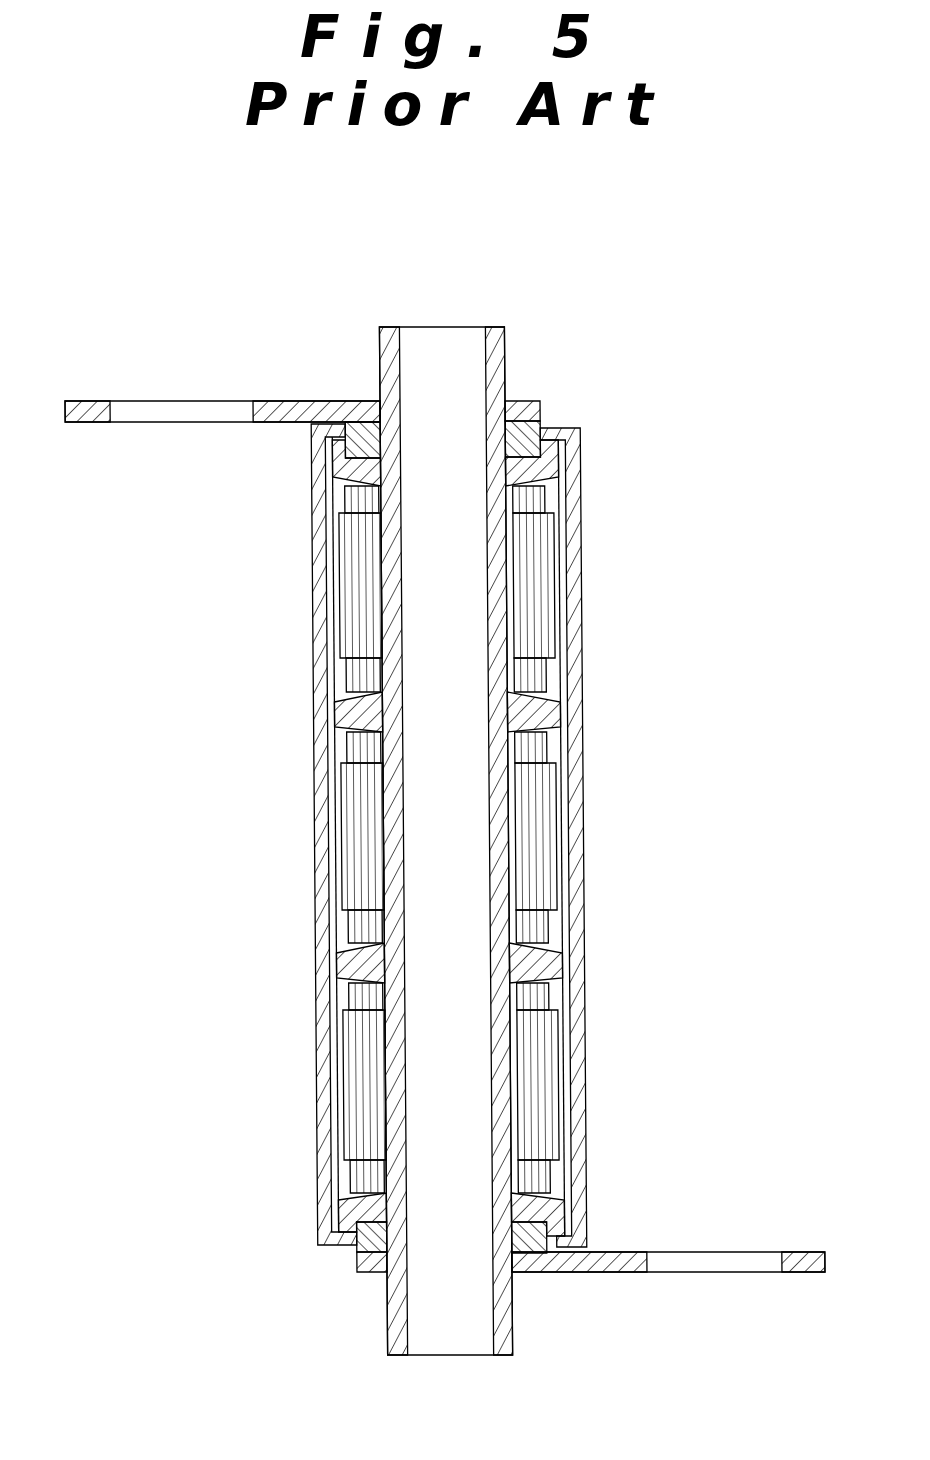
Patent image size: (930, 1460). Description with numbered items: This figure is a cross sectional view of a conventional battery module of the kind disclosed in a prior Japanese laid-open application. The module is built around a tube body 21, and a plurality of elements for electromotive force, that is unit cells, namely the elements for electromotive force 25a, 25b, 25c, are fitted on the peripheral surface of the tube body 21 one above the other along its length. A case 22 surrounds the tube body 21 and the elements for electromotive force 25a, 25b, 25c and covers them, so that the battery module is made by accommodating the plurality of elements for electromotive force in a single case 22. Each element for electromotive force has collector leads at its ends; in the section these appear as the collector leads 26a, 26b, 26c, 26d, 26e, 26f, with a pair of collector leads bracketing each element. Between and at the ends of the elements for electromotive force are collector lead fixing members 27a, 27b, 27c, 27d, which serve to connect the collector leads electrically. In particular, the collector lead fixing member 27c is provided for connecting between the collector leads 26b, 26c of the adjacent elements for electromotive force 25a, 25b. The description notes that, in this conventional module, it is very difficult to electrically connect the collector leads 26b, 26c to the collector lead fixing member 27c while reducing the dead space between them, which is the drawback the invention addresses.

The tube body 21 is at (502, 345).
The case 22 is at (313, 550).
The element for electromotive force 25a is at (550, 582).
The element for electromotive force 25b is at (545, 850).
The element for electromotive force 25c is at (548, 1100).
The collector lead 26a is at (547, 490).
The collector lead 26b is at (547, 670).
The collector lead 26c is at (545, 744).
The collector lead 26d is at (557, 907).
The collector lead 26e is at (545, 997).
The collector lead 26f is at (550, 1180).
The collector lead fixing member 27a is at (573, 443).
The collector lead fixing member 27b is at (580, 1215).
The collector lead fixing member 27c is at (545, 722).
The collector lead fixing member 27d is at (545, 975).